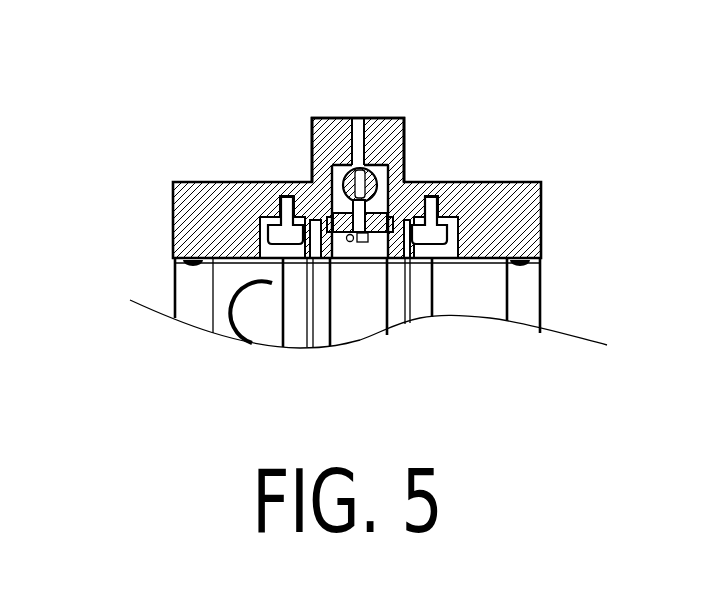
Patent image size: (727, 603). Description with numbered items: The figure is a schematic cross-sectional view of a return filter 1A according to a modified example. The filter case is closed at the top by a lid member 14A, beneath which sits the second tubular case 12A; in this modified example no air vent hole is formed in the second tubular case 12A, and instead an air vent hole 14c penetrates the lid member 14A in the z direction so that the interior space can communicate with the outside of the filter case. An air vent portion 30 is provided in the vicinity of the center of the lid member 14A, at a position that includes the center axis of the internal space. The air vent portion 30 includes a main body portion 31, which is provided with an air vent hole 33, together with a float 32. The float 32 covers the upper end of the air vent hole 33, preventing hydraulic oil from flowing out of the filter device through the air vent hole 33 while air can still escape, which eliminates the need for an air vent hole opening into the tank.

The return filter 1A is at (597, 58).
The second tubular case 12A is at (523, 297).
The lid member 14A is at (542, 237).
The air vent hole 14c is at (359, 142).
The air vent portion 30 is at (129, 100).
The main body portion 31 is at (281, 195).
The float 32 is at (328, 152).
The air vent hole 33 is at (342, 192).